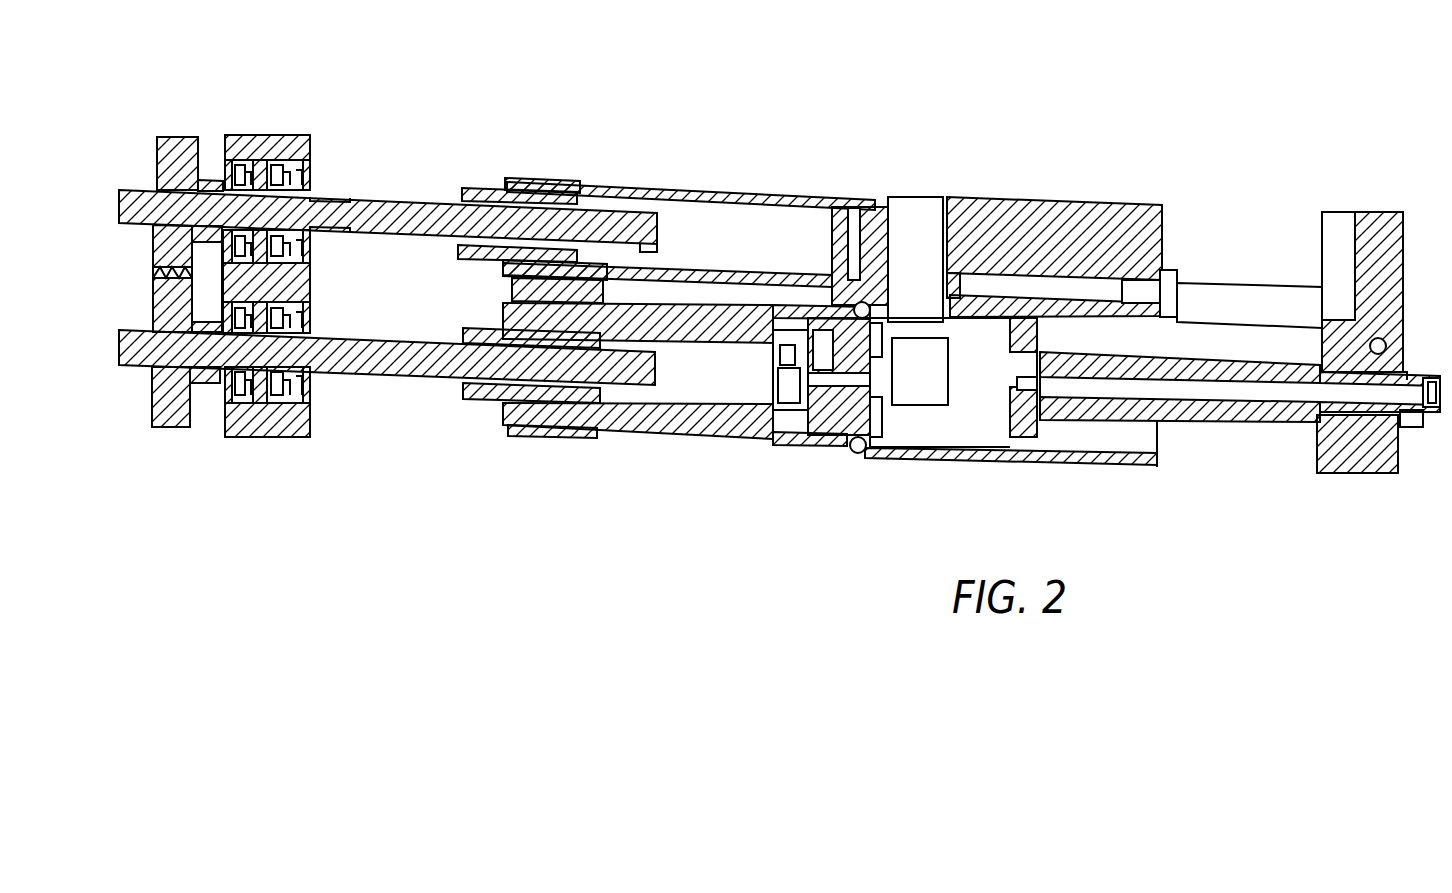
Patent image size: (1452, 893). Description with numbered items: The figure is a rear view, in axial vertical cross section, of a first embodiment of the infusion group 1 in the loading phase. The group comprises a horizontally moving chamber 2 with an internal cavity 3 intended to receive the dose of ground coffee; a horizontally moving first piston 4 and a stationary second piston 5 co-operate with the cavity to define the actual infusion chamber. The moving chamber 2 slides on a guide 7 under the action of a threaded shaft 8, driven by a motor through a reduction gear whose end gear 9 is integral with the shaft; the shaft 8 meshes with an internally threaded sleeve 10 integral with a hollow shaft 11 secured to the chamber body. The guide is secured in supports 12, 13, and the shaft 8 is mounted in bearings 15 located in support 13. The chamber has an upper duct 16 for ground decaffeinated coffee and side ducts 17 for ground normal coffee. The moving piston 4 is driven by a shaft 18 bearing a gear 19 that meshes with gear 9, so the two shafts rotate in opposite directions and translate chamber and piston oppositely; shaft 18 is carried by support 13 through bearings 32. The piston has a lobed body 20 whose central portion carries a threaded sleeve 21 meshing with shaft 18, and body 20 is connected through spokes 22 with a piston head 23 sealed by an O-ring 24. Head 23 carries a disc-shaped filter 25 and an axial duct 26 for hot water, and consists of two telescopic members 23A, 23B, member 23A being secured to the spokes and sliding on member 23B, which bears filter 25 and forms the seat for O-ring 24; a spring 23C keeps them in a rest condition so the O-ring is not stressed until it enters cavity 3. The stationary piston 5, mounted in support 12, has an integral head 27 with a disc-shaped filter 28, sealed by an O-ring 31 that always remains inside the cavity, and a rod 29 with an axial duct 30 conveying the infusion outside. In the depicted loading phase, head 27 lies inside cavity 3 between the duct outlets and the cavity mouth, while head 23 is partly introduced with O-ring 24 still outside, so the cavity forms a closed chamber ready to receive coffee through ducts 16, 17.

The infusion group 1 is at (779, 326).
The moving chamber 2 is at (1062, 228).
The internal cavity 3 is at (990, 427).
The first piston 4 is at (830, 410).
The second stationary piston 5 is at (1240, 445).
The guide 7 is at (1240, 300).
The threaded shaft 8 is at (392, 197).
The end gear 9 is at (174, 147).
The internally threaded sleeve 10 is at (480, 193).
The hollow shaft 11 is at (690, 193).
The support 12 is at (1377, 237).
The support 13 is at (295, 290).
The bearings 15 is at (285, 170).
The upper duct 16 is at (915, 213).
The side openings or ducts 17 is at (930, 390).
The shaft 18 is at (393, 370).
The gear 19 is at (173, 410).
The body 20 is at (563, 433).
The threaded sleeve 21 is at (477, 392).
The spokes 22 is at (688, 440).
The piston head 23 is at (825, 461).
The member 23A is at (790, 430).
The member 23B is at (876, 400).
The spring 23C is at (810, 398).
The O-ring 24 is at (852, 456).
The disc-shaped filter 25 is at (880, 457).
The axial duct 26 is at (826, 425).
The head 27 is at (1040, 435).
The disc-shaped filter 28 is at (998, 330).
The rod 29 is at (1248, 410).
The axial duct 30 is at (1353, 437).
The O-ring 31 is at (1023, 443).
The bearings 32 is at (277, 397).